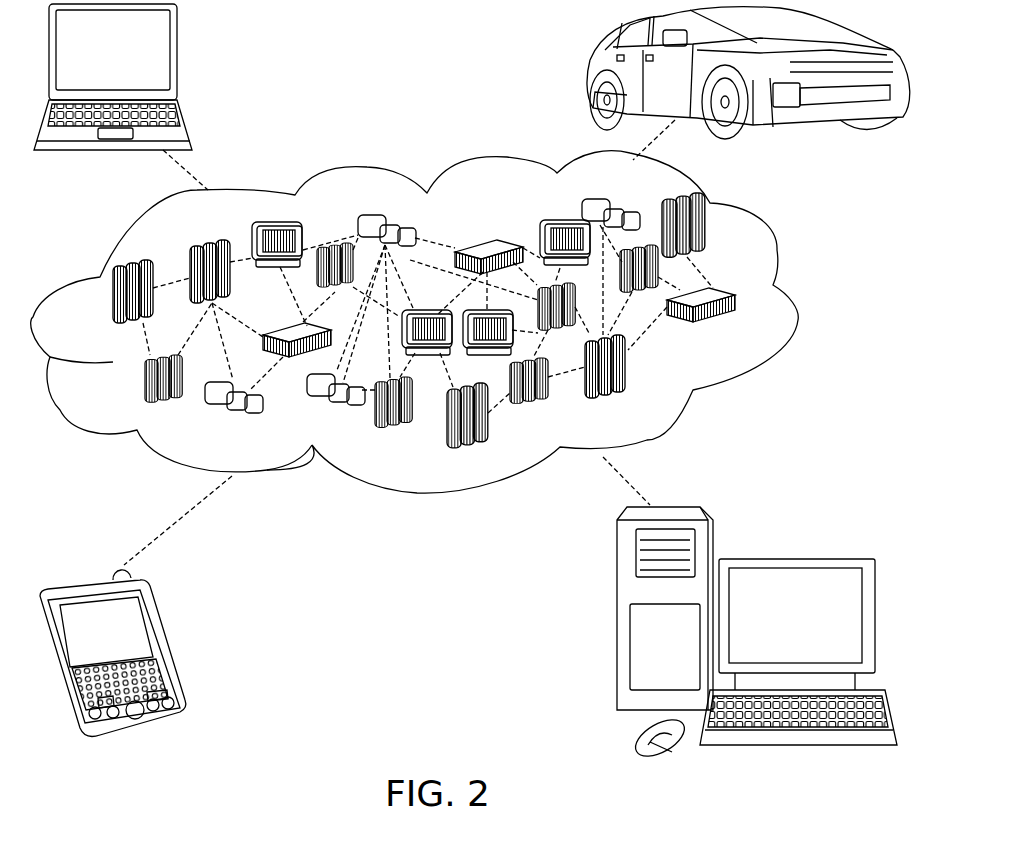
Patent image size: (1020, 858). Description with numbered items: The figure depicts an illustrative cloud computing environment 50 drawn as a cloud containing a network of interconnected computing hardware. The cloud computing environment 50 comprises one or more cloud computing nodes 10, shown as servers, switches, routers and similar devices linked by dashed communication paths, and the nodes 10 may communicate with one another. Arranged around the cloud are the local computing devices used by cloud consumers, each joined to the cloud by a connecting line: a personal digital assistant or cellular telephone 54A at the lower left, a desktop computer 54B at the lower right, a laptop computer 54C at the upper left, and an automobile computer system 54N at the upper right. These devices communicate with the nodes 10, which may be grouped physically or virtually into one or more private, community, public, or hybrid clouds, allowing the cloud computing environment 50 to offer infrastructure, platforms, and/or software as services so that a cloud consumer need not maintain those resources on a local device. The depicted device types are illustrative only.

The cloud computing nodes 10 is at (740, 327).
The cloud computing environment 50 is at (793, 300).
The personal digital assistant or cellular telephone 54A is at (170, 638).
The desktop computer 54B is at (795, 559).
The laptop computer 54C is at (178, 58).
The automobile computer system 54N is at (590, 73).